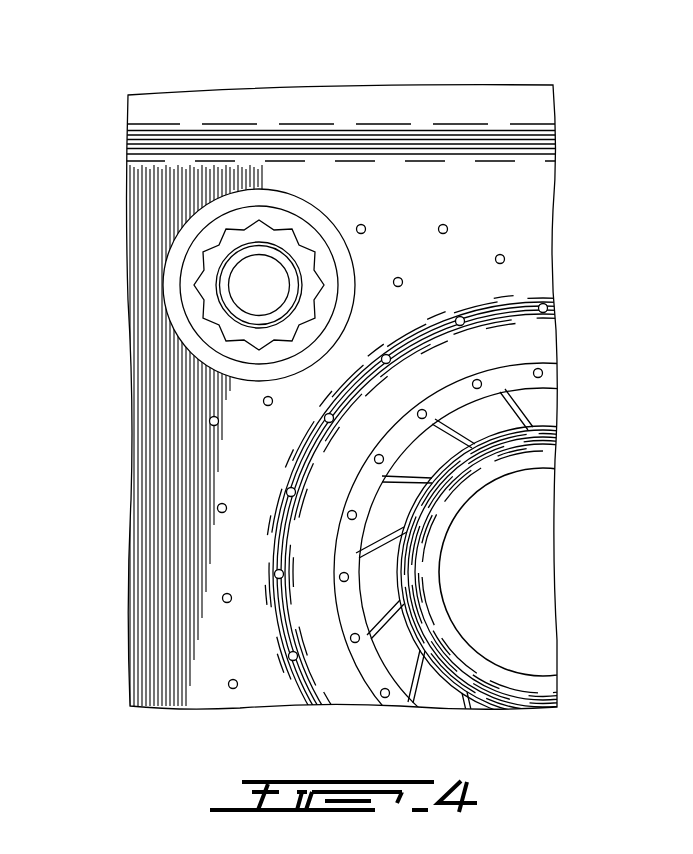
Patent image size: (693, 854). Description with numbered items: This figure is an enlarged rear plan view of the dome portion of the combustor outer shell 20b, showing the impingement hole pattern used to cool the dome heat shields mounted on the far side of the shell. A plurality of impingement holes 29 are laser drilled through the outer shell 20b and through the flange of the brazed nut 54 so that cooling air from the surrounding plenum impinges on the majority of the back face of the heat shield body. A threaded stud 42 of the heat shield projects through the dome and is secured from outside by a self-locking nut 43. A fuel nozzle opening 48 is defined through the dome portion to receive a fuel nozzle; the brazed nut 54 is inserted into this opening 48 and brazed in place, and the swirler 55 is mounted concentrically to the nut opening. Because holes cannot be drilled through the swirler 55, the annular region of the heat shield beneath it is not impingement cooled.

The outer shell 20b is at (382, 180).
The impingement holes 29 is at (505, 261).
The threaded studs 42 is at (259, 284).
The self-locking nuts 43 is at (220, 315).
The fuel nozzle openings 48 is at (523, 591).
The brazed nut 54 is at (350, 547).
The swirler 55 is at (407, 577).